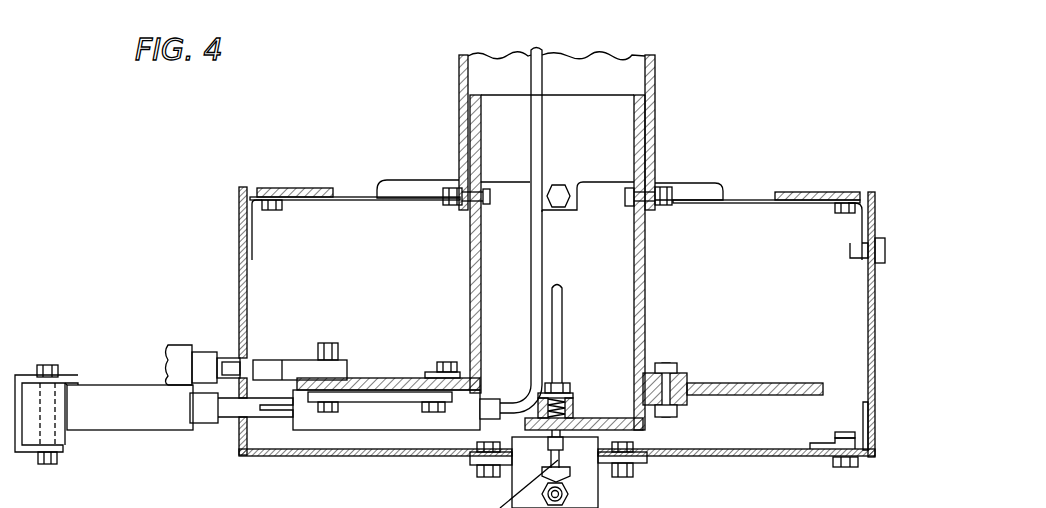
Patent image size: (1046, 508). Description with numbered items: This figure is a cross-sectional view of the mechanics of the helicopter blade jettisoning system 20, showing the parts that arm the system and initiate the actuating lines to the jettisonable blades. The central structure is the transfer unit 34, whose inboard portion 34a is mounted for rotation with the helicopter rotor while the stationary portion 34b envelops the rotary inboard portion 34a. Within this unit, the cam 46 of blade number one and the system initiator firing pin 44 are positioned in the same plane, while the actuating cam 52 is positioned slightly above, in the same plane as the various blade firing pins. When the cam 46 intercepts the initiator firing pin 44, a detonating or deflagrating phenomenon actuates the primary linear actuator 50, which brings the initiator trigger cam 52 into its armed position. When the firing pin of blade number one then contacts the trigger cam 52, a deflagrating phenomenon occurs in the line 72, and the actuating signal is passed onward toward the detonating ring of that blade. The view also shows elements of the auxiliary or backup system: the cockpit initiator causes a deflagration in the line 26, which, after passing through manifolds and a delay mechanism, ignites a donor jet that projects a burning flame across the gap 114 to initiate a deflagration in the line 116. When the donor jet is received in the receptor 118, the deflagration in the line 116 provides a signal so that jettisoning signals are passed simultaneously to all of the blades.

The helicopter blade jettisoning system 20 is at (718, 75).
The transfer unit 34 is at (875, 312).
The inboard portion of transfer unit 34a is at (752, 200).
The stationary portion of transfer unit 34b is at (180, 345).
The system initiator firing pin 44 is at (209, 358).
The cam 46 is at (293, 360).
The primary linear actuator 50 is at (97, 398).
The actuating cam 52 is at (258, 418).
The deflagrating line 72 is at (537, 243).
The gap 114 is at (547, 440).
The deflagration line 116 is at (560, 298).
The receptor 118 is at (572, 400).
The deflagration line 26 is at (568, 494).